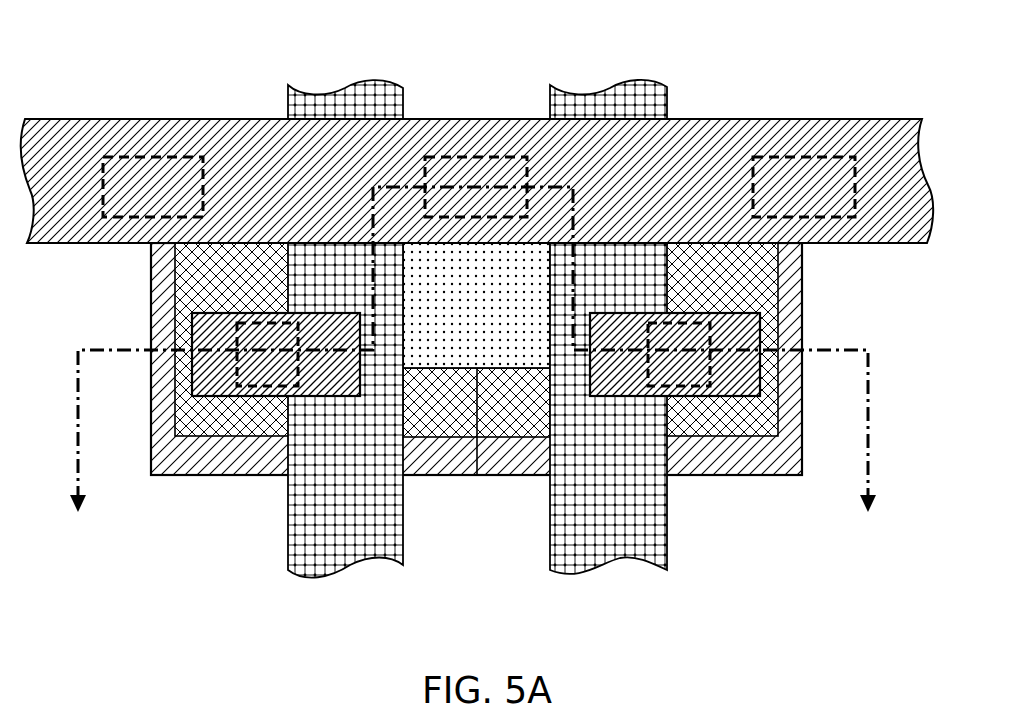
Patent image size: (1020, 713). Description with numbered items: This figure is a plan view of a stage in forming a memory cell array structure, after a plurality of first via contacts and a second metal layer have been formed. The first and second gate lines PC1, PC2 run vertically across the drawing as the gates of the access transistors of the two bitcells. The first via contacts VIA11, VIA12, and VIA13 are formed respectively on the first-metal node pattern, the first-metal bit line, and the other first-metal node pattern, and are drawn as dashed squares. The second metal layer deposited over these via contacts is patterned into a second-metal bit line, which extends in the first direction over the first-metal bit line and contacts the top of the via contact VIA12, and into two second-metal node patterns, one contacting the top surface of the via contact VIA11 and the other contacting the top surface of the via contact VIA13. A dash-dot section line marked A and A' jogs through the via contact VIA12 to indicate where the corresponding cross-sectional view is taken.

The first via contact VIA12 is at (482, 140).
The first via contact VIA11 is at (230, 372).
The first gate line PC1 is at (317, 567).
The second gate line PC2 is at (602, 553).
The first via contact VIA13 is at (679, 396).
The section line A is at (80, 522).
The section line A' is at (877, 524).